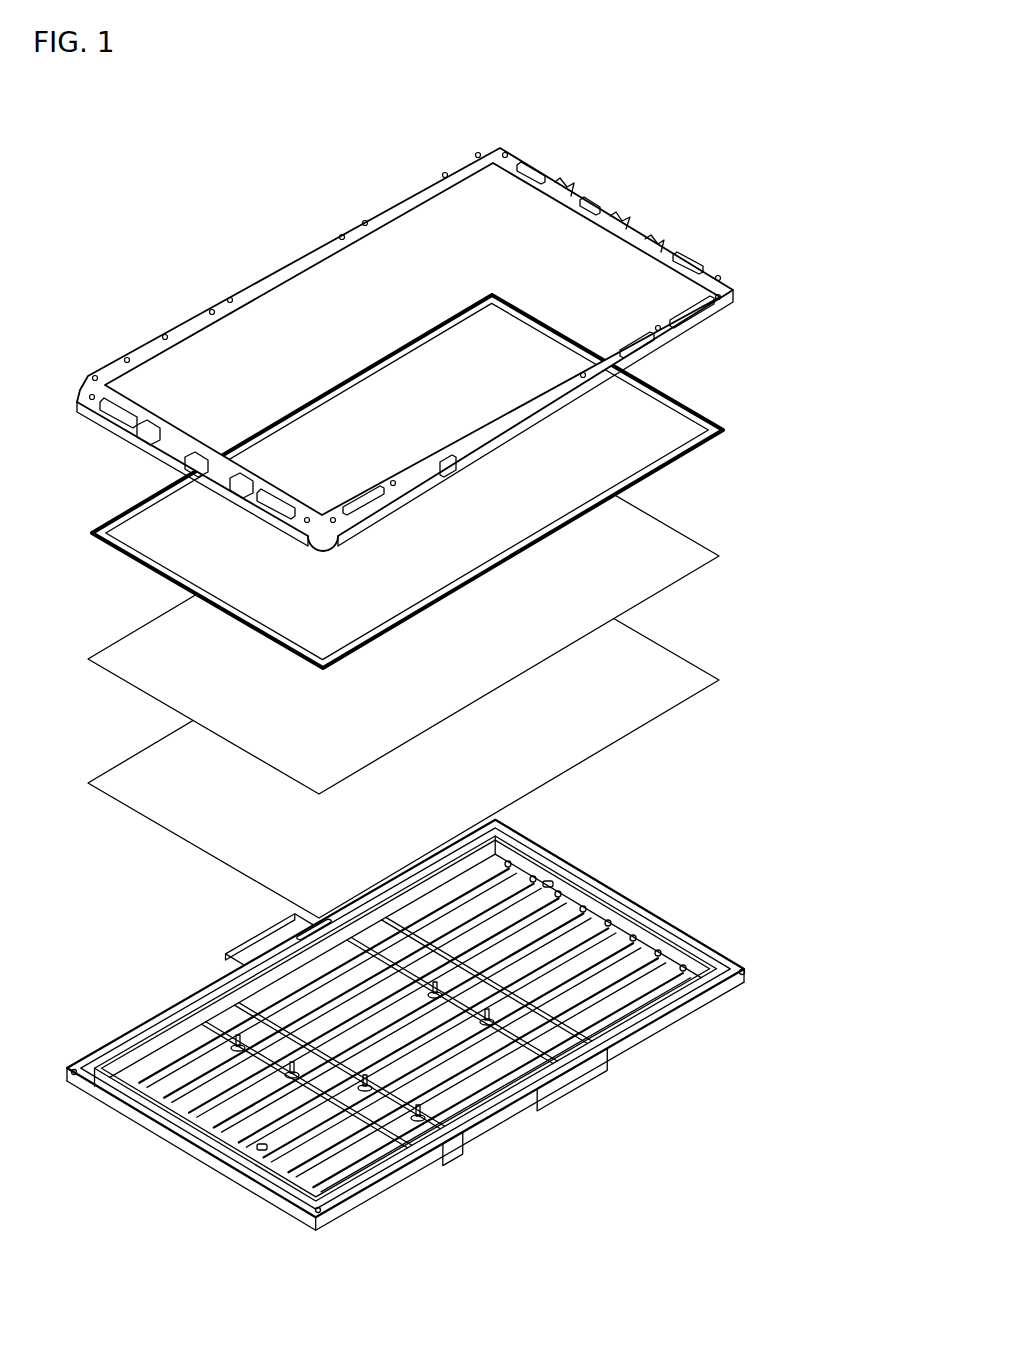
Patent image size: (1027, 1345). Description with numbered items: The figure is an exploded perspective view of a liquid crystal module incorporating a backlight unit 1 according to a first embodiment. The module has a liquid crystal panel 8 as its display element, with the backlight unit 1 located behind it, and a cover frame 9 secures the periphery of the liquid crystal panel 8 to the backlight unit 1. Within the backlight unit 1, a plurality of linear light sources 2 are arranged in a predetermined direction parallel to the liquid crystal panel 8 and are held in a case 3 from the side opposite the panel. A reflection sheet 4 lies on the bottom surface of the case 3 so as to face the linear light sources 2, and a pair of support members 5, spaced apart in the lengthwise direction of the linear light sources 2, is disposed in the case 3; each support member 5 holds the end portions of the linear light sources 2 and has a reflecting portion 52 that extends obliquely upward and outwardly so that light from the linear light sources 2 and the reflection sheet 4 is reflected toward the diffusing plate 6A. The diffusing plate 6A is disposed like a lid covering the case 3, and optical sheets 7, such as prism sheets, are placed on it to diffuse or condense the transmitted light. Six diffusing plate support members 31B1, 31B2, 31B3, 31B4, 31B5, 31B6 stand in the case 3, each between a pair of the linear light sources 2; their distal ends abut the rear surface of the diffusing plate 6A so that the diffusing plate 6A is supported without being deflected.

The backlight unit 1 is at (812, 478).
The linear light source 2 is at (683, 960).
The case 3 is at (700, 1003).
The reflection sheet 4 is at (500, 1067).
The support member 5 is at (618, 905).
The reflecting portion 52 is at (548, 885).
The diffusing plate 6A is at (660, 670).
The optical sheet 7 is at (660, 530).
The liquid crystal panel 8 is at (660, 413).
The cover frame 9 is at (255, 283).
The diffusing plate support member 31B1 is at (420, 1110).
The diffusing plate support member 31B2 is at (365, 1080).
The diffusing plate support member 31B3 is at (490, 1012).
The diffusing plate support member 31B4 is at (437, 990).
The diffusing plate support member 31B5 is at (292, 1064).
The diffusing plate support member 31B6 is at (236, 1040).